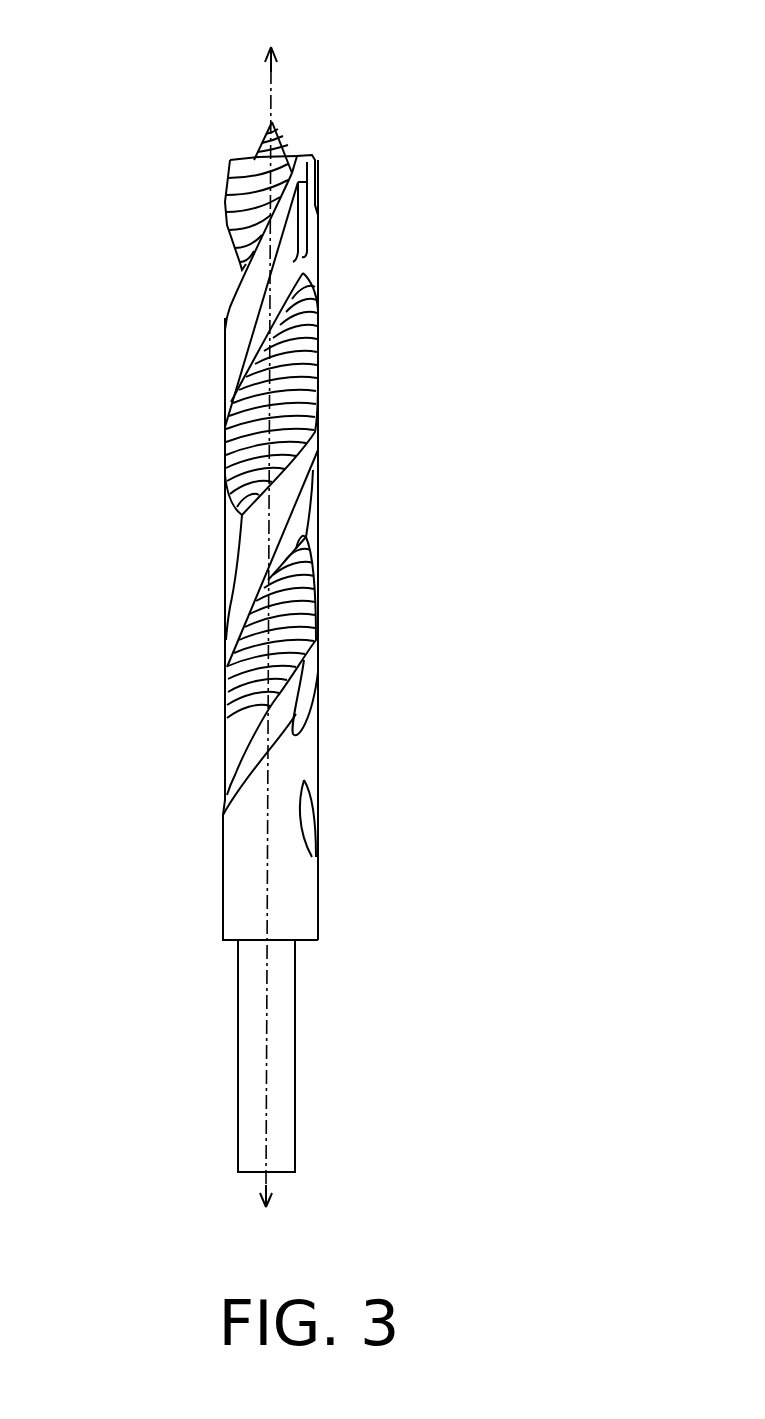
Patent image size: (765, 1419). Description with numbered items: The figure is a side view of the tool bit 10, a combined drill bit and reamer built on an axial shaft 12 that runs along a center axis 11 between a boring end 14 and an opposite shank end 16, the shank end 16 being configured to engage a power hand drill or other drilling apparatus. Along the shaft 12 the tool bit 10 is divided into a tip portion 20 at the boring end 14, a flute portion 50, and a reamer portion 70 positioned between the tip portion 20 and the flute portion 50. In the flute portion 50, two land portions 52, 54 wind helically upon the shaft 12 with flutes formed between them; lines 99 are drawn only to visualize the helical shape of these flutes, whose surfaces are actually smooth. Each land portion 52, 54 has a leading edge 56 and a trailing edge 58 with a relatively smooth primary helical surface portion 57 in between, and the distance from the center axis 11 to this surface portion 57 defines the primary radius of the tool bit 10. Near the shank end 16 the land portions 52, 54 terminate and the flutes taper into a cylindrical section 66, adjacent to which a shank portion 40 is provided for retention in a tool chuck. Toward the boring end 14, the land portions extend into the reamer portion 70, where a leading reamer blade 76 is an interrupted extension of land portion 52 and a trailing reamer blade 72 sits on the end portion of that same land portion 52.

The tool bit 10 is at (137, 338).
The center axis 11 is at (272, 73).
The axial shaft 12 is at (287, 772).
The boring end 14 is at (250, 173).
The shank end 16 is at (283, 1102).
The tip portion 20 is at (403, 95).
The shank portion 40 is at (250, 1038).
The flute portion 50 is at (401, 290).
The land portion 52 is at (238, 318).
The land portion 54 is at (220, 603).
The leading edge 56 is at (313, 498).
The primary helical surface portion 57 is at (243, 555).
The trailing edge 58 is at (223, 363).
The cylindrical section 66 is at (300, 895).
The reamer portion 70 is at (403, 160).
The trailing reamer blade 72 is at (292, 258).
The leading reamer blade 76 is at (312, 195).
The lines 99 is at (238, 453).